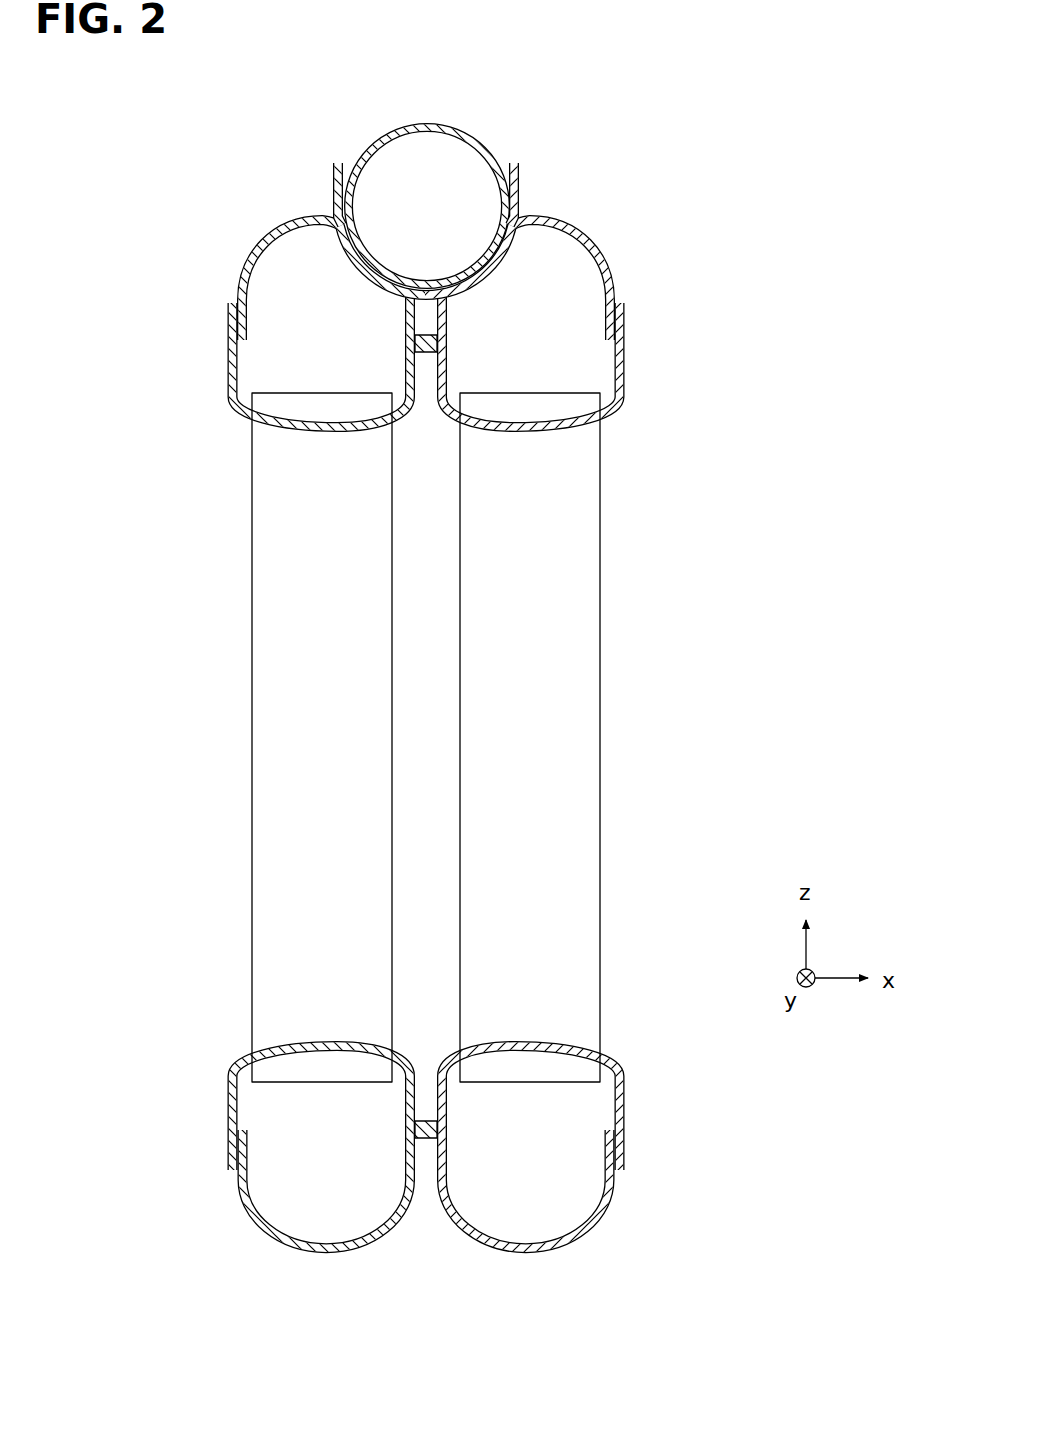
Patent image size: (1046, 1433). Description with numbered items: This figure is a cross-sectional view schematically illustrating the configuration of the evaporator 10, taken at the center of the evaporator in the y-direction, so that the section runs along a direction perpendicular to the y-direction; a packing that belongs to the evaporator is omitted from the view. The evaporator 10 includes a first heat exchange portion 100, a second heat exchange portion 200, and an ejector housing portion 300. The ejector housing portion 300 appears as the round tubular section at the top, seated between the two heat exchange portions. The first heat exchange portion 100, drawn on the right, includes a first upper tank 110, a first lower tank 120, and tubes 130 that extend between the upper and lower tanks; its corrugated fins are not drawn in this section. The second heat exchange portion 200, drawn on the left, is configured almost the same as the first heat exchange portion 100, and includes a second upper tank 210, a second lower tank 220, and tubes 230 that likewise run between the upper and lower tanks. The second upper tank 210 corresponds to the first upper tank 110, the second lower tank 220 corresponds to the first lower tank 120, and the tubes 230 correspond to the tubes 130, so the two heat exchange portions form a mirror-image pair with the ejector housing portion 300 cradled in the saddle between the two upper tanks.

The evaporator 10 is at (700, 284).
The first heat exchange portion 100 is at (524, 1268).
The first upper tank 110 is at (600, 242).
The first lower tank 120 is at (610, 1195).
The tubes 130 is at (570, 722).
The second heat exchange portion 200 is at (340, 1268).
The second upper tank 210 is at (267, 247).
The second lower tank 220 is at (245, 1202).
The tubes 230 is at (277, 696).
The ejector housing portion 300 is at (440, 122).